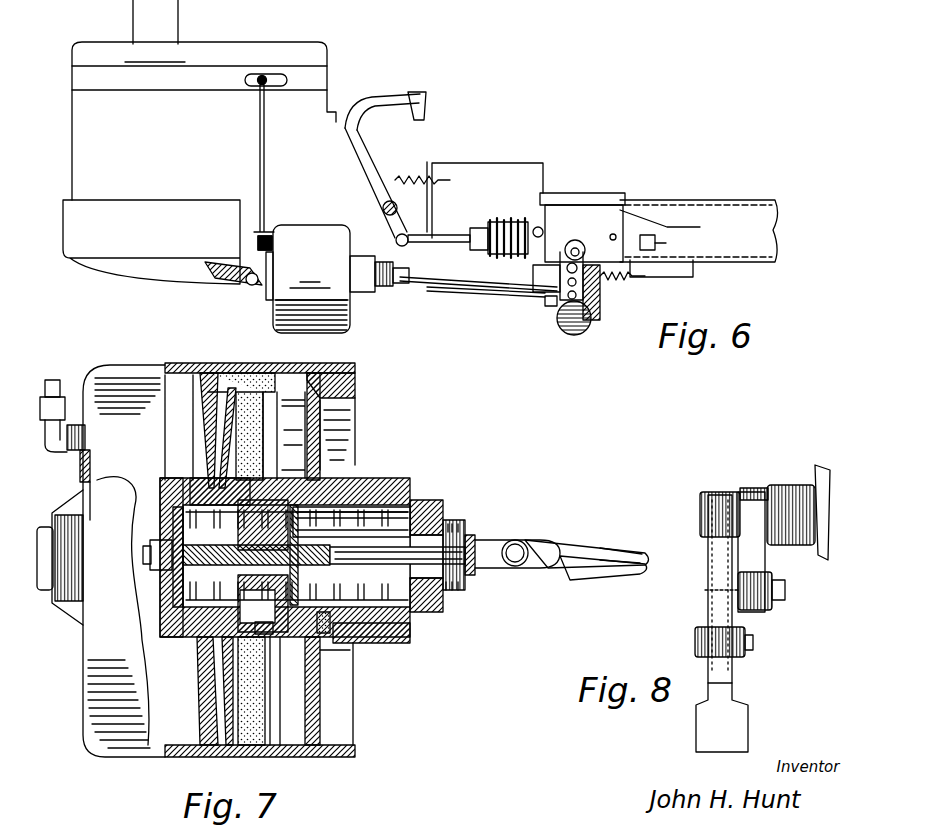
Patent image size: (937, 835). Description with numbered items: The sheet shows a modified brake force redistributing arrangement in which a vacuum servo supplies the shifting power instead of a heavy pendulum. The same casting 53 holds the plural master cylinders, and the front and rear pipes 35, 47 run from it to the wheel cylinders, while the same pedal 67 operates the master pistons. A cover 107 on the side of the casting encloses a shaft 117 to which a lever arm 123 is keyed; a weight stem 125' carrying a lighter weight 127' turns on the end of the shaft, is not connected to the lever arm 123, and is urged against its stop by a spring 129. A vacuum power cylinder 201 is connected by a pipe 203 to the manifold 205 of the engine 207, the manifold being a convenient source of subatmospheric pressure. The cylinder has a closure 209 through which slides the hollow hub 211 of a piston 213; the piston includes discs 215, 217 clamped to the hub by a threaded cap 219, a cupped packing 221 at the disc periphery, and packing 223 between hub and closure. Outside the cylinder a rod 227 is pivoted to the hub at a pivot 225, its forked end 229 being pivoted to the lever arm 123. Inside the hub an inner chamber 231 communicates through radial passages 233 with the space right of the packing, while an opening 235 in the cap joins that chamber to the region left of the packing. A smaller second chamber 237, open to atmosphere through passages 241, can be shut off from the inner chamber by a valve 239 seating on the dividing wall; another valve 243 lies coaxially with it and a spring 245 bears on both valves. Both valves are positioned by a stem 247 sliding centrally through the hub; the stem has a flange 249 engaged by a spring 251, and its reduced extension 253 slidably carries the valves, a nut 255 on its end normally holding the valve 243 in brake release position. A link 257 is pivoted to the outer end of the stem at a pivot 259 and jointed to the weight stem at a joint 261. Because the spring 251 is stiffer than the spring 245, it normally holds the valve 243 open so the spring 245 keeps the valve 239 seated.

In FIG. 6, the pipe 35 is at (648, 250).
In FIG. 6, the pipe 47 is at (688, 224).
In FIG. 6, the casting 53 is at (613, 213).
In FIG. 6, the pedal 67 is at (365, 152).
In FIG. 6, the cover 107 is at (573, 236).
In FIG. 8, the cover 107 is at (812, 484).
In FIG. 6, the shaft 117 is at (585, 266).
In FIG. 8, the shaft 117 is at (700, 508).
In FIG. 8, the lever arm 123 is at (758, 553).
In FIG. 6, the weight stem 125' is at (509, 308).
In FIG. 8, the weight stem 125' is at (697, 589).
In FIG. 6, the weight 127' is at (563, 340).
In FIG. 8, the weight 127' is at (759, 717).
In FIG. 6, the spring 129 is at (600, 286).
In FIG. 6, the vacuum power cylinder 201 is at (283, 232).
In FIG. 7, the vacuum power cylinder 201 is at (150, 372).
In FIG. 6, the pipe 203 is at (266, 108).
In FIG. 7, the pipe 203 is at (62, 380).
In FIG. 6, the manifold 205 is at (226, 82).
In FIG. 6, the engine 207 is at (98, 136).
In FIG. 6, the closure 209 is at (352, 313).
In FIG. 7, the closure 209 is at (342, 400).
In FIG. 6, the hub 211 is at (362, 258).
In FIG. 7, the hub 211 is at (418, 512).
In FIG. 7, the piston 213 is at (190, 438).
In FIG. 7, the disc 215 is at (357, 375).
In FIG. 7, the disc 217 is at (207, 372).
In FIG. 7, the threaded cap 219 is at (178, 628).
In FIG. 7, the cupped packing 221 is at (246, 372).
In FIG. 7, the packing 223 is at (300, 480).
In FIG. 7, the pivot 225 is at (522, 542).
In FIG. 6, the rod 227 is at (512, 284).
In FIG. 7, the rod 227 is at (612, 545).
In FIG. 6, the forked end 229 is at (551, 308).
In FIG. 8, the forked end 229 is at (752, 603).
In FIG. 7, the inner chamber 231 is at (277, 612).
In FIG. 7, the radial passages 233 is at (283, 645).
In FIG. 7, the opening 235 is at (163, 578).
In FIG. 7, the second chamber 237 is at (383, 472).
In FIG. 7, the valve 239 is at (331, 630).
In FIG. 7, the passages 241 is at (410, 605).
In FIG. 7, the valve 243 is at (160, 530).
In FIG. 7, the spring 245 is at (208, 480).
In FIG. 7, the stem 247 is at (460, 547).
In FIG. 6, the flange 249 is at (384, 236).
In FIG. 7, the flange 249 is at (470, 578).
In FIG. 7, the spring 251 is at (450, 537).
In FIG. 7, the reduced extension 253 is at (330, 506).
In FIG. 7, the nut 255 is at (157, 550).
In FIG. 6, the link 257 is at (478, 296).
In FIG. 7, the link 257 is at (612, 568).
In FIG. 6, the pivot 259 is at (406, 276).
In FIG. 7, the pivot 259 is at (532, 548).
In FIG. 6, the joint 261 is at (592, 302).
In FIG. 8, the joint 261 is at (718, 648).